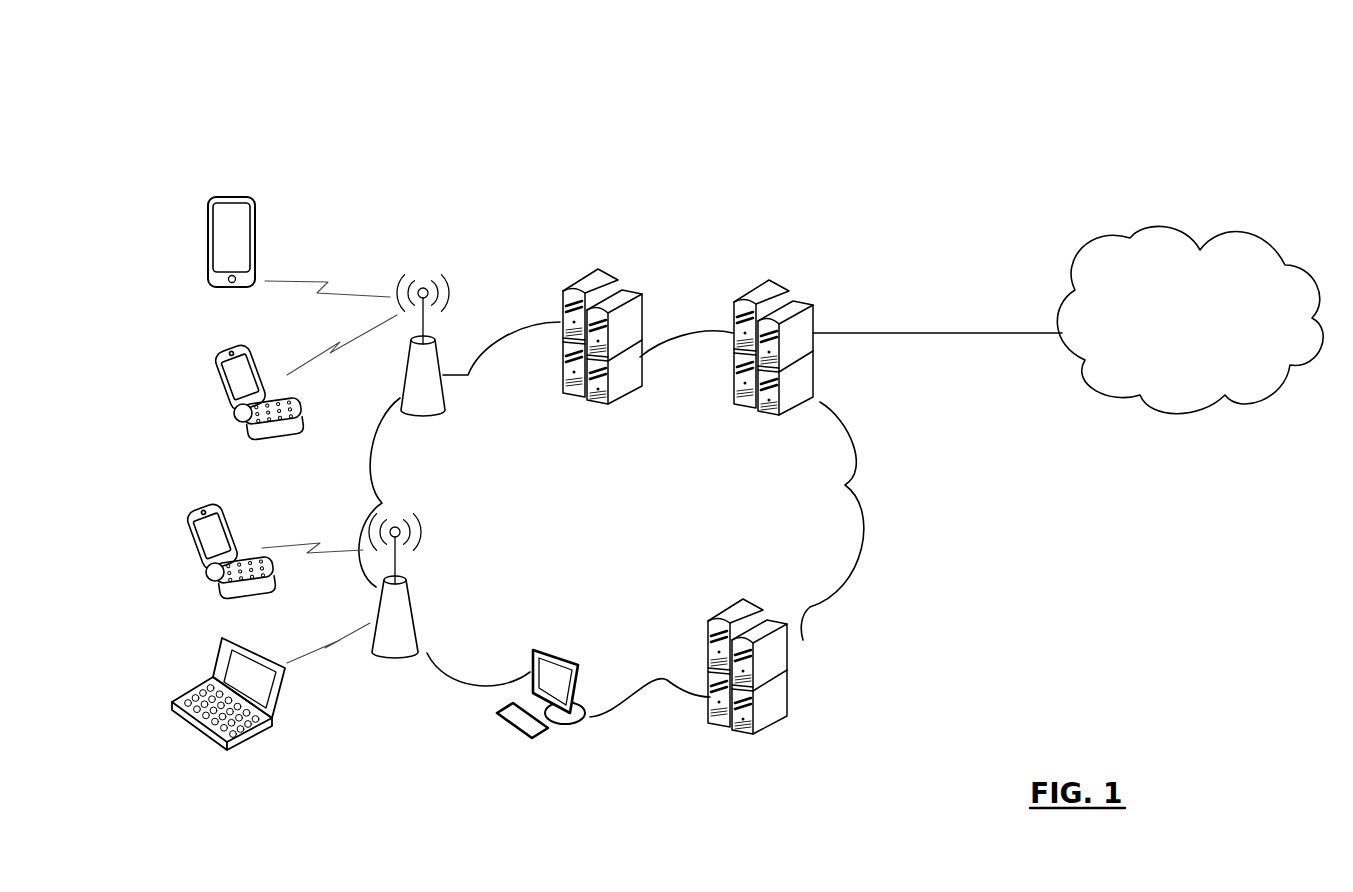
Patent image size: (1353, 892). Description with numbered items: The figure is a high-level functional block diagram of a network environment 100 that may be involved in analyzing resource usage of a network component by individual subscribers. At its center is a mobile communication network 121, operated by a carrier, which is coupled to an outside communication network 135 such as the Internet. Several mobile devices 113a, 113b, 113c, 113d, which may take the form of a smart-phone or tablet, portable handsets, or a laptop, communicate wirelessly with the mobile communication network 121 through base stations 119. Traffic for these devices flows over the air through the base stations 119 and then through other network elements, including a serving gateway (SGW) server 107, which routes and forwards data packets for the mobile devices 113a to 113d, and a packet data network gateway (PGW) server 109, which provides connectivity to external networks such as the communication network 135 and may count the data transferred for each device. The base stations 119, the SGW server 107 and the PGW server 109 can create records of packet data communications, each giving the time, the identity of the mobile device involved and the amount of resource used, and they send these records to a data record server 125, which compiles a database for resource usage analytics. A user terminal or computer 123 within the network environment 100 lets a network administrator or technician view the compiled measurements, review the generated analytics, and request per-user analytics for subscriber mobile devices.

The network environment 100 is at (751, 60).
The serving gateway (SGW) server 107 is at (598, 270).
The packet data network gateway (PGW) server 109 is at (768, 288).
The mobile device 113a is at (207, 237).
The mobile device 113b is at (227, 394).
The mobile device 113c is at (203, 546).
The mobile device 113d is at (212, 665).
The base station 119 is at (420, 275).
The mobile communication network 121 is at (611, 519).
The user terminal or computer 123 is at (568, 727).
The data record server 125 is at (788, 658).
The communication network 135 is at (1203, 240).